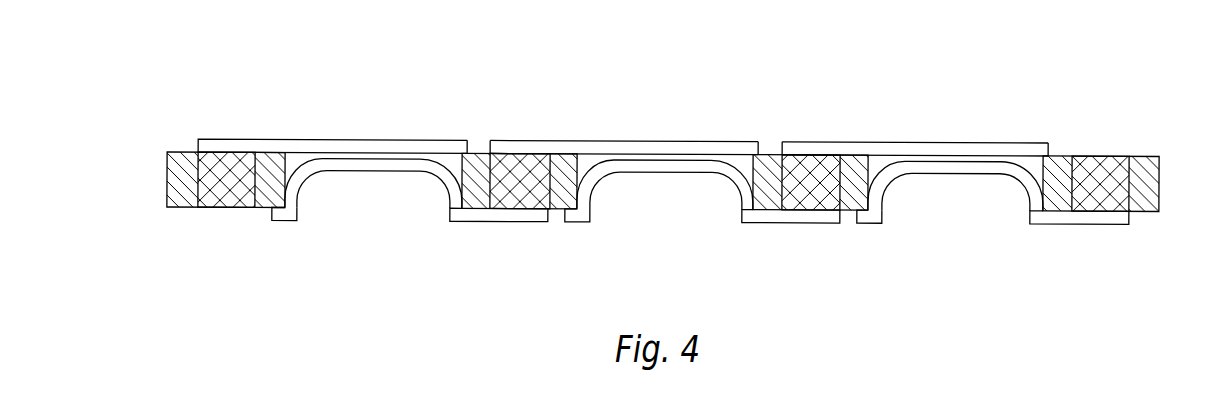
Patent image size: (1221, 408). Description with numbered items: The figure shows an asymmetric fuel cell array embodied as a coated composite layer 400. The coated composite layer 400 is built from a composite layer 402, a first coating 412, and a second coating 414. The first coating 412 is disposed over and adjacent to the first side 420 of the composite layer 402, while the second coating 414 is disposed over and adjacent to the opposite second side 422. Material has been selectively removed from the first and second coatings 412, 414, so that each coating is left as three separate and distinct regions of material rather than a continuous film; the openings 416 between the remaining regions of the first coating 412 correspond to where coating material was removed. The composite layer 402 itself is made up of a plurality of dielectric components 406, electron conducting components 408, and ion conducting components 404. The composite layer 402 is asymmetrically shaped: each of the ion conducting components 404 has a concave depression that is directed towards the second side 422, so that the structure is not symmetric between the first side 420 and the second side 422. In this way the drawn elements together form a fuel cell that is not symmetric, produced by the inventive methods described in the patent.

The coated composite layer 400 is at (193, 61).
The composite layer 402 is at (162, 150).
The ion conducting components 404 is at (591, 162).
The dielectric components 406 is at (478, 208).
The electron conducting components 408 is at (817, 160).
The first coating 412 is at (320, 143).
The second coating 414 is at (767, 222).
The gap 416 is at (480, 148).
The first side 420 is at (1048, 155).
The second side 422 is at (1130, 212).